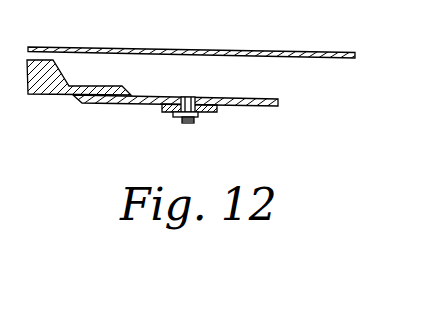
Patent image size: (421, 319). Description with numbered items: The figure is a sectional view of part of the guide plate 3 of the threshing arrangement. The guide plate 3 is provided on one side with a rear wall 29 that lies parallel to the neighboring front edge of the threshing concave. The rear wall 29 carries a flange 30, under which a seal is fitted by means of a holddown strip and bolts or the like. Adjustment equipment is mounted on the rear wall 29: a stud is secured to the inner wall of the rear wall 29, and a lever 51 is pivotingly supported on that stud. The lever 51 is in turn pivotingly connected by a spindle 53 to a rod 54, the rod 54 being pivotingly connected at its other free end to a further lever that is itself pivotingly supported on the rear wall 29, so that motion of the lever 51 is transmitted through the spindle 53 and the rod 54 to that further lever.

The guide plate 3 is at (254, 41).
The rear wall 29 is at (117, 47).
The flange 30 is at (187, 62).
The rod 54 is at (53, 72).
The lever 51 is at (200, 126).
The spindle 53 is at (186, 125).